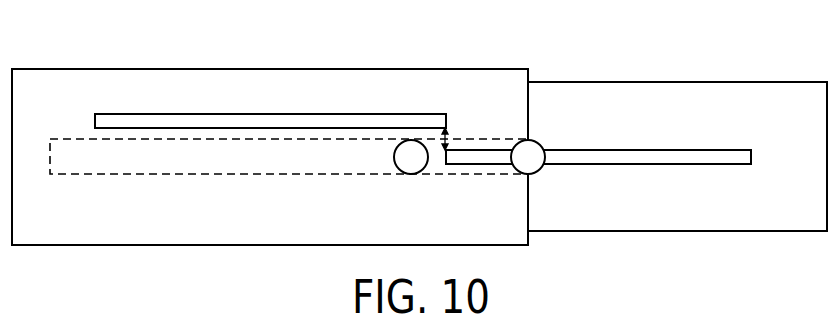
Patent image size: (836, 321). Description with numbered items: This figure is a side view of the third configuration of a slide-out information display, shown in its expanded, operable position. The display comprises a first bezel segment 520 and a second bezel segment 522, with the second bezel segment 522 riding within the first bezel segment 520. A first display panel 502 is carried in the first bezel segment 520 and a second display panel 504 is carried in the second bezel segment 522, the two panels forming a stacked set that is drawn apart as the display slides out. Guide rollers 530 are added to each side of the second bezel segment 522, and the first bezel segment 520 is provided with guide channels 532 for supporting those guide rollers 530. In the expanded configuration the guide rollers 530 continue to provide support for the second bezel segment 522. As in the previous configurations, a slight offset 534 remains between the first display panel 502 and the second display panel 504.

The first display panel 502 is at (297, 114).
The second display panel 504 is at (609, 150).
The first bezel segment 520 is at (185, 69).
The second bezel segment 522 is at (775, 82).
The guide rollers 530 is at (412, 158).
The guide channels 532 is at (120, 176).
The slight offset 534 is at (444, 141).